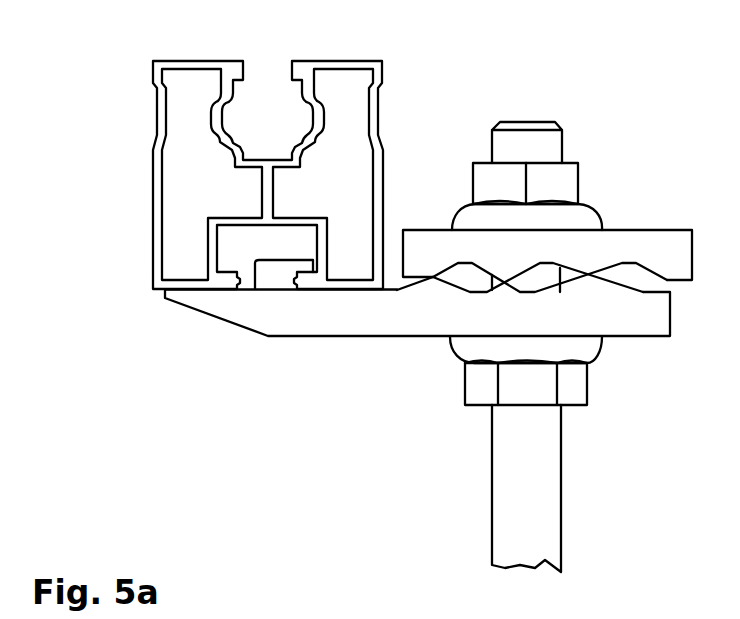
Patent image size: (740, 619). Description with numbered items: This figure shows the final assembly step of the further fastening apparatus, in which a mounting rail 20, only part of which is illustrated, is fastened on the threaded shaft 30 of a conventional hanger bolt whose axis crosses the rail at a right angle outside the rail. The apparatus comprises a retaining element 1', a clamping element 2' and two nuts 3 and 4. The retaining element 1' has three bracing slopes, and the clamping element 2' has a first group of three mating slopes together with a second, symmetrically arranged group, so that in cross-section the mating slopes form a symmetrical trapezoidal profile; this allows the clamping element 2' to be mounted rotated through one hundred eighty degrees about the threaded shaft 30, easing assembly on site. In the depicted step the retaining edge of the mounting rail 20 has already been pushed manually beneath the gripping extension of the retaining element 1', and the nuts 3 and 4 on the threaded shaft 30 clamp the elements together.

The mounting rail 20 is at (403, 65).
The retaining element 1' is at (417, 330).
The clamping element 2' is at (547, 223).
The nut 4 is at (583, 185).
The nut 3 is at (590, 382).
The threaded shaft 30 is at (563, 502).